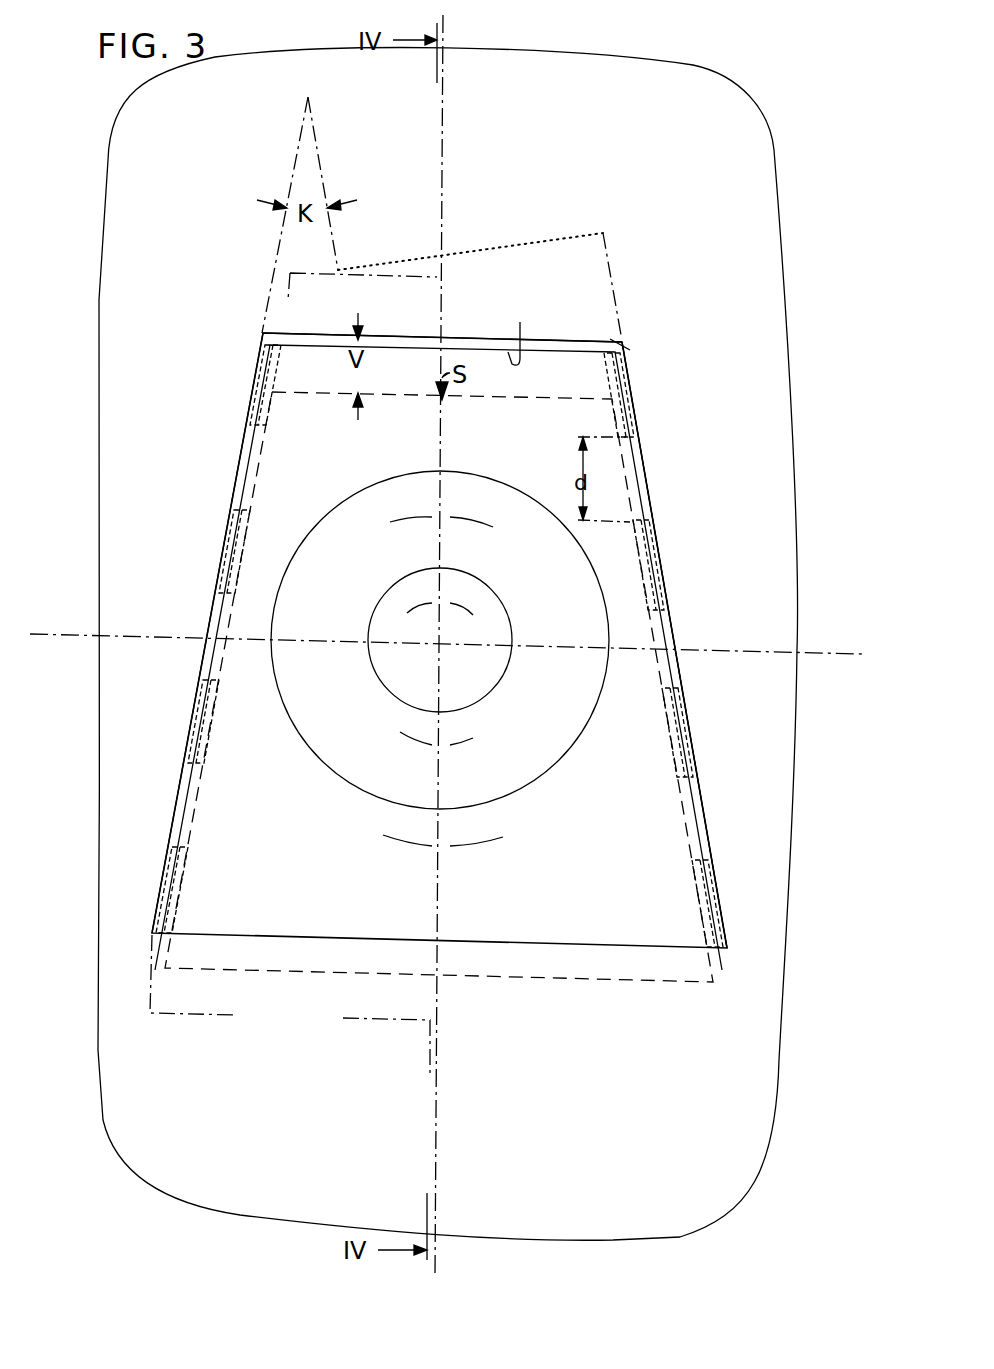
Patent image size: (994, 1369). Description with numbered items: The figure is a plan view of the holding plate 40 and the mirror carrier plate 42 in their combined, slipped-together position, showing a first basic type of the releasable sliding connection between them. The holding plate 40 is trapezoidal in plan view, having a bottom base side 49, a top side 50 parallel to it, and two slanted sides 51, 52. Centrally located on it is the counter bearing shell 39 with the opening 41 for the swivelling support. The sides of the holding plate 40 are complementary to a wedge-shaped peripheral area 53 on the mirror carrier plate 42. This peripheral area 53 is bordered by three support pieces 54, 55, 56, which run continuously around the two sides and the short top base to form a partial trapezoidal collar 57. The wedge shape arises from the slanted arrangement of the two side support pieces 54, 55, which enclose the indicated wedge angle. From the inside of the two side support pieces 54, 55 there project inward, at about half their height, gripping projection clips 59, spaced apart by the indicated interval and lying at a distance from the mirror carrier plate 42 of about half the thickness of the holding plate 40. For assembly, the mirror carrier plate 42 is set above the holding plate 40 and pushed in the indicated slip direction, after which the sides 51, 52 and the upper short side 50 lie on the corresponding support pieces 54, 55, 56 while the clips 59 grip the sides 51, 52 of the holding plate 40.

The counter bearing shell 39 is at (565, 722).
The holding plate 40 is at (650, 905).
The opening 41 is at (472, 685).
The mirror carrier plate 42 is at (742, 166).
The bottom base side 49 is at (557, 947).
The top side 50 is at (520, 331).
The side 51 is at (255, 449).
The side 52 is at (633, 457).
The peripheral area 53 is at (572, 328).
The support piece 54 is at (234, 606).
The support piece 55 is at (669, 621).
The support piece 56 is at (472, 346).
The partial trapezoidal collar 57 is at (624, 364).
The gripping projection clips 59 is at (704, 898).